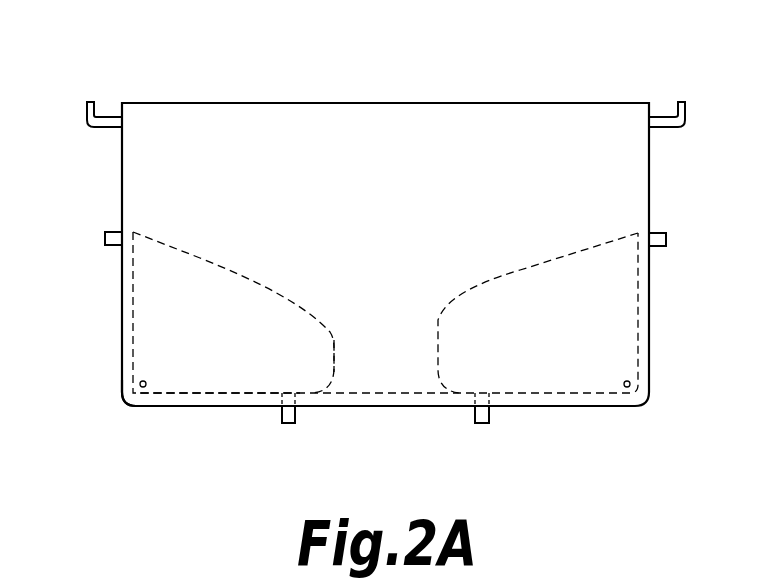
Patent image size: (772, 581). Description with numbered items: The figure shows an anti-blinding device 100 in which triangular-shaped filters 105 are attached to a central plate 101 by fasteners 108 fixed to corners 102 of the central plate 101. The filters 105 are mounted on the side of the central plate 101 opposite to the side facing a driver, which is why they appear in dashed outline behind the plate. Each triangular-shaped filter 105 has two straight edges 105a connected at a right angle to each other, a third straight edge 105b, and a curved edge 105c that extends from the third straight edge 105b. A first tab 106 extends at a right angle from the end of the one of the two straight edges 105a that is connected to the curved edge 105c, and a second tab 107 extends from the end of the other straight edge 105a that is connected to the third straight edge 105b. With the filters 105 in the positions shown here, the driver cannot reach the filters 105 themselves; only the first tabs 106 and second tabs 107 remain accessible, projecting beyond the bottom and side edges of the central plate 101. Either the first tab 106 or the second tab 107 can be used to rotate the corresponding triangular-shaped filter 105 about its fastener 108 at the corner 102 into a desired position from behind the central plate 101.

The anti-blinding device 100 is at (122, 101).
The central plate 101 is at (649, 184).
The corner 102 is at (122, 392).
The triangular-shaped filter 105 is at (143, 316).
The straight edge 105a is at (190, 392).
The third straight edge 105b is at (212, 262).
The curved edge 105c is at (332, 335).
The first tab 106 is at (290, 423).
The second tab 107 is at (105, 238).
The fastener 108 is at (143, 388).